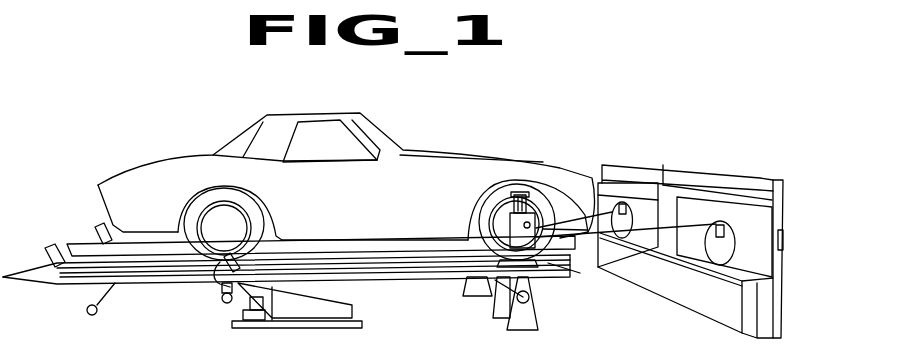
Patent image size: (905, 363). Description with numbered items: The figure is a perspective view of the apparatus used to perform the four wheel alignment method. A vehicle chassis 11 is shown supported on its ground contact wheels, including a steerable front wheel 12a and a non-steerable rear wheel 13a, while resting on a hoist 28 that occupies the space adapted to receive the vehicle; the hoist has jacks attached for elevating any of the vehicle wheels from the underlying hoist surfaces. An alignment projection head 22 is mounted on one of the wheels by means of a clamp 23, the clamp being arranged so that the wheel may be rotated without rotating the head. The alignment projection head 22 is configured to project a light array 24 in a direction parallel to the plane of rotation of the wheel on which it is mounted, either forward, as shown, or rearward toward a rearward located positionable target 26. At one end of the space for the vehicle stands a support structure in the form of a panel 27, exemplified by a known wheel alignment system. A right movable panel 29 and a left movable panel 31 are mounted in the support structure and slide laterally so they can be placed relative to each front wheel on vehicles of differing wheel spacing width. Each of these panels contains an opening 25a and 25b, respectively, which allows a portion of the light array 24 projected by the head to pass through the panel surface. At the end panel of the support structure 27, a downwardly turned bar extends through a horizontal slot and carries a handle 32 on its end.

The vehicle chassis 11 is at (299, 113).
The steerable front wheel 12a is at (507, 187).
The non-steerable rear wheel 13a is at (208, 200).
The alignment projection head 22 is at (510, 228).
The clamp 23 is at (515, 202).
The light array 24 is at (593, 200).
The opening 25a is at (720, 222).
The opening 25b is at (623, 203).
The positionable target 26 is at (227, 260).
The panel 27 is at (778, 175).
The hoist 28 is at (397, 272).
The right movable panel 29 is at (763, 277).
The left movable panel 31 is at (648, 185).
The handle 32 is at (786, 245).